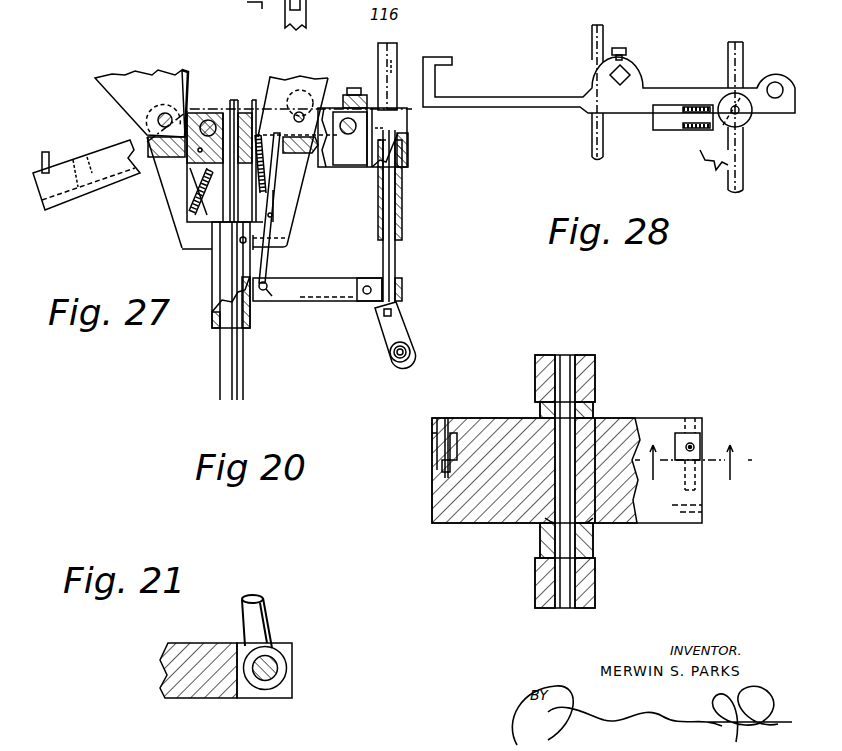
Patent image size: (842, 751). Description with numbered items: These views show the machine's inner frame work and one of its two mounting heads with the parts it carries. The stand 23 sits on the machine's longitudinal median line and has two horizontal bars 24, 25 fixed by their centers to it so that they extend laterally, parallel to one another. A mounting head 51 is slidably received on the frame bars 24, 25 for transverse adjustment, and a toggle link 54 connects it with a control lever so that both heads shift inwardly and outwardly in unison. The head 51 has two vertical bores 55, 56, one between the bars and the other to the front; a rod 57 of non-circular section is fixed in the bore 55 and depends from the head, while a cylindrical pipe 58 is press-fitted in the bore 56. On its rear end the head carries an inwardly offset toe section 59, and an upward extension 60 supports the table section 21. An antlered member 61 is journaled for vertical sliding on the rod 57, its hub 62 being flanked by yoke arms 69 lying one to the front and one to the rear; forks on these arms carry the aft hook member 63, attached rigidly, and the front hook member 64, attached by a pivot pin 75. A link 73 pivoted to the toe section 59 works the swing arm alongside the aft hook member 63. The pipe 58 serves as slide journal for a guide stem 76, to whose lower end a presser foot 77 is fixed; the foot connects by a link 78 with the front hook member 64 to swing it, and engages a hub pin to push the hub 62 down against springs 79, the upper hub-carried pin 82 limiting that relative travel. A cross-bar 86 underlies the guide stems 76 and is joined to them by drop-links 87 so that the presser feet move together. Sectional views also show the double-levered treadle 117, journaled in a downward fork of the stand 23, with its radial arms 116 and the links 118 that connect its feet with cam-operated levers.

In FIG. 20, the table section 21 is at (696, 461).
In FIG. 20, the stand 23 is at (596, 368).
In FIG. 27, the horizontal bar 24 is at (365, 104).
In FIG. 28, the horizontal bar 24 is at (744, 45).
In FIG. 27, the horizontal bar 25 is at (204, 120).
In FIG. 28, the horizontal bar 25 is at (604, 36).
In FIG. 27, the mounting head 51 is at (359, 176).
In FIG. 28, the mounting head 51 is at (673, 86).
In FIG. 27, the toggle link 54 is at (346, 95).
In FIG. 27, the vertical bore 55 is at (210, 113).
In FIG. 28, the vertical bore 55 is at (611, 73).
In FIG. 27, the vertical bore 56 is at (410, 160).
In FIG. 28, the vertical bore 56 is at (777, 82).
In FIG. 27, the rod 57 is at (243, 371).
In FIG. 27, the cylindrical pipe 58 is at (403, 206).
In FIG. 27, the toe section 59 is at (108, 180).
In FIG. 28, the toe section 59 is at (447, 52).
In FIG. 28, the upward extension 60 is at (672, 128).
In FIG. 27, the antlered member 61 is at (174, 252).
In FIG. 27, the hub 62 is at (207, 281).
In FIG. 27, the aft hook member 63 is at (128, 106).
In FIG. 27, the front hook member 64 is at (297, 82).
In FIG. 27, the yoke arm 69 is at (174, 210).
In FIG. 27, the link 73 is at (48, 156).
In FIG. 27, the pivot pin 75 is at (296, 114).
In FIG. 27, the guide stem 76 is at (396, 262).
In FIG. 27, the presser foot 77 is at (343, 299).
In FIG. 27, the link 78 is at (269, 262).
In FIG. 27, the spring 79 is at (199, 181).
In FIG. 27, the hub-carried pin 82 is at (242, 243).
In FIG. 27, the cross-bar 86 is at (394, 356).
In FIG. 27, the drop-link 87 is at (400, 326).
In FIG. 20, the arm 116 is at (596, 530).
In FIG. 20, the double-levered treadle 117 is at (490, 522).
In FIG. 21, the double-levered treadle 117 is at (195, 657).
In FIG. 20, the link 118 is at (433, 482).
In FIG. 21, the link 118 is at (262, 603).